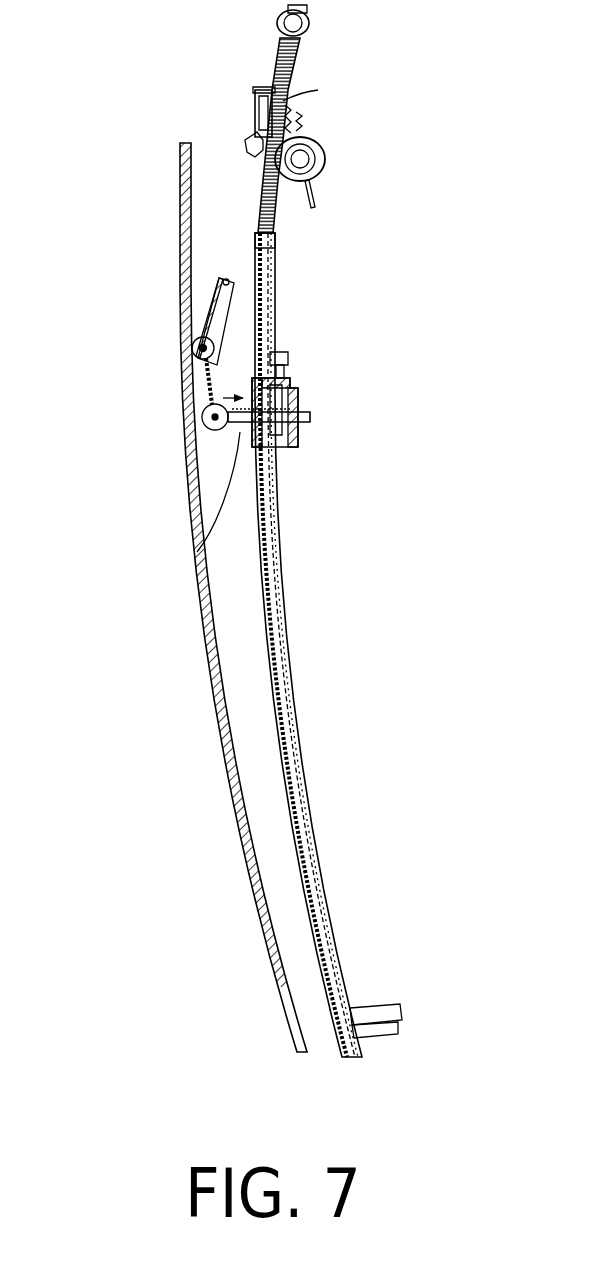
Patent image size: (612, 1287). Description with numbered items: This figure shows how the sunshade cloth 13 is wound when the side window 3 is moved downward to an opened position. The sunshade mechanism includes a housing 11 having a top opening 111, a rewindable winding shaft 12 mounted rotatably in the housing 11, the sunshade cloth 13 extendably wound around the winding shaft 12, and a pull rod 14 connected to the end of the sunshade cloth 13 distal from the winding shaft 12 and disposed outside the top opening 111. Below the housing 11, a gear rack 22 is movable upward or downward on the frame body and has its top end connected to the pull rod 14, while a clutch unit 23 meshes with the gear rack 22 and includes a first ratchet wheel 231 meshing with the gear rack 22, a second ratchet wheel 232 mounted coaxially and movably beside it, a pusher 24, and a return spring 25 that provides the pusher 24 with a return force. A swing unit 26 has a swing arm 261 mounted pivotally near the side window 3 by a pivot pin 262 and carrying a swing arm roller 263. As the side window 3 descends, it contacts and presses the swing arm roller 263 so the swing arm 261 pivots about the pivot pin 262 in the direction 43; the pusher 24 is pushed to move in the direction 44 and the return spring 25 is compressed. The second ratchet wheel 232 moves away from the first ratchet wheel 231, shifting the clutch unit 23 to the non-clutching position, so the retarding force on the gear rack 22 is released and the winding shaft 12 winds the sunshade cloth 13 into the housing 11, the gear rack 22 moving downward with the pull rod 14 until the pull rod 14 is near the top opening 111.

The side window 3 is at (180, 192).
The housing 11 is at (325, 166).
The top opening 111 is at (286, 98).
The winding shaft 12 is at (322, 170).
The sunshade cloth 13 is at (325, 152).
The pull rod 14 is at (304, 40).
The gear rack 22 is at (273, 215).
The clutch unit 23 is at (293, 448).
The first ratchet wheel 231 is at (275, 378).
The second ratchet wheel 232 is at (298, 395).
The pusher 24 is at (235, 425).
The return spring 25 is at (197, 552).
The swing unit 26 is at (181, 411).
The swing arm 261 is at (222, 398).
The pivot pin 262 is at (221, 279).
The swing arm roller 263 is at (196, 339).
The direction 43 is at (238, 312).
The direction 44 is at (203, 373).